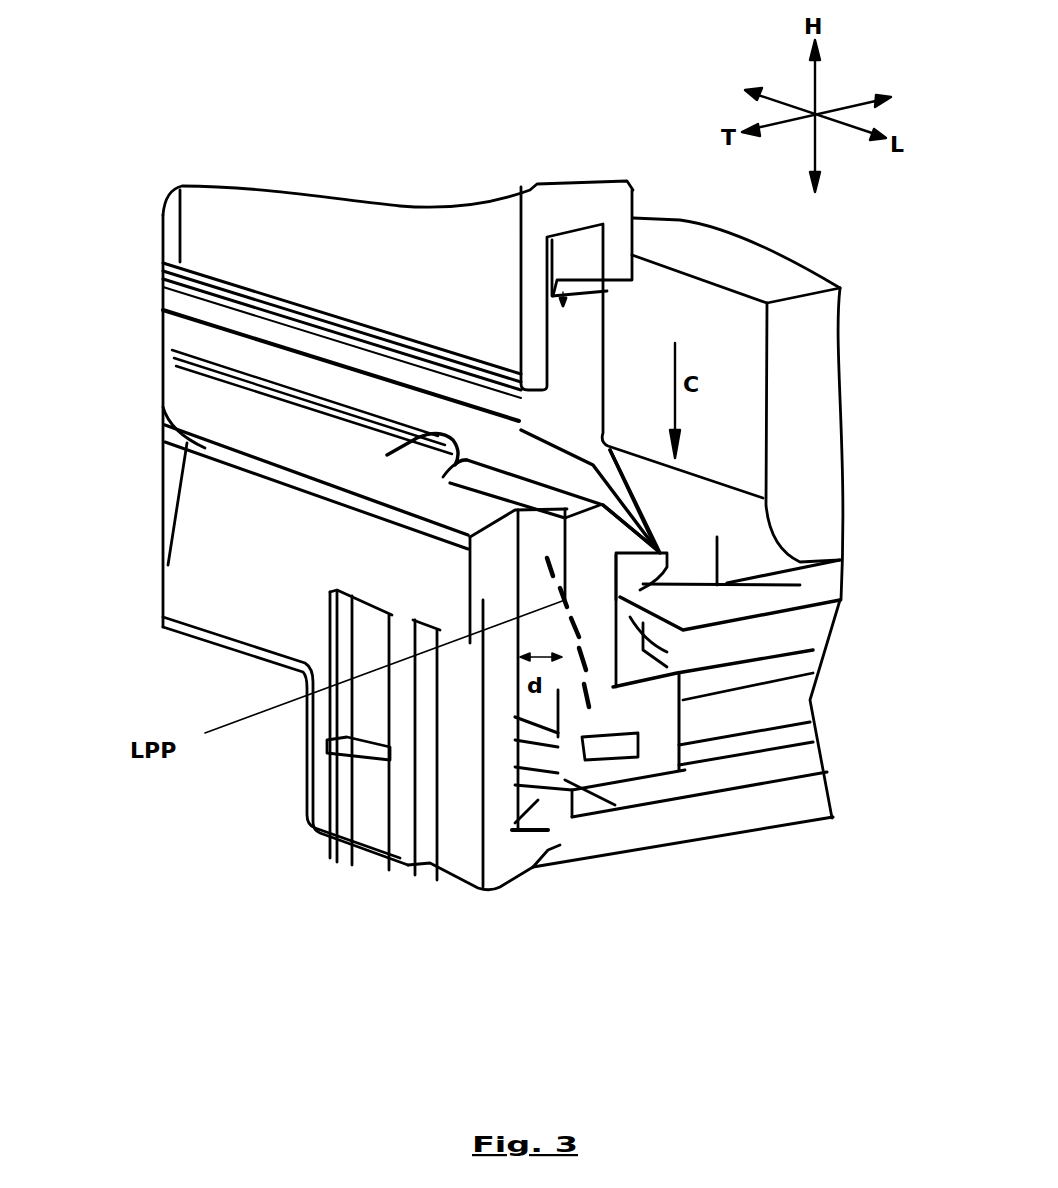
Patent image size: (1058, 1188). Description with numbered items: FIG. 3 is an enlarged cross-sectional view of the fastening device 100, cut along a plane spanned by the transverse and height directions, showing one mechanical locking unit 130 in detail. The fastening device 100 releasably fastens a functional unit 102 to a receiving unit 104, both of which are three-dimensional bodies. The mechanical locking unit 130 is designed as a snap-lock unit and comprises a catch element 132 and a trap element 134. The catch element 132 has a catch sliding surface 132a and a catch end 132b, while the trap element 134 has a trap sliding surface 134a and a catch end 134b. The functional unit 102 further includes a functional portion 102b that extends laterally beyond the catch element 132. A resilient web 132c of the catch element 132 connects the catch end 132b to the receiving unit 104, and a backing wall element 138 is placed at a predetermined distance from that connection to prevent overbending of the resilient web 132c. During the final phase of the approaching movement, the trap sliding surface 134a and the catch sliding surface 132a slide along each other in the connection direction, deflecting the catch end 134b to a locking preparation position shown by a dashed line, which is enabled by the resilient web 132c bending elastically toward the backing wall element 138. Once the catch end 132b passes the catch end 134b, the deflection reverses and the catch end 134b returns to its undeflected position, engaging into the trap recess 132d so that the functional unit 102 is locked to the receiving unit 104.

The fastening device 100 is at (228, 160).
The functional unit 102 is at (395, 222).
The functional portion 102b is at (172, 334).
The receiving unit 104 is at (717, 813).
The mechanical locking unit 130 is at (468, 716).
The catch element 132 is at (613, 713).
The catch sliding surface 132a is at (648, 524).
The catch end 132b is at (610, 537).
The resilient web 132c is at (590, 613).
The trap recess 132d is at (668, 554).
The trap element 134 is at (693, 603).
The trap sliding surface 134a is at (683, 676).
The catch end 134b is at (643, 583).
The backing wall element 138 is at (490, 588).